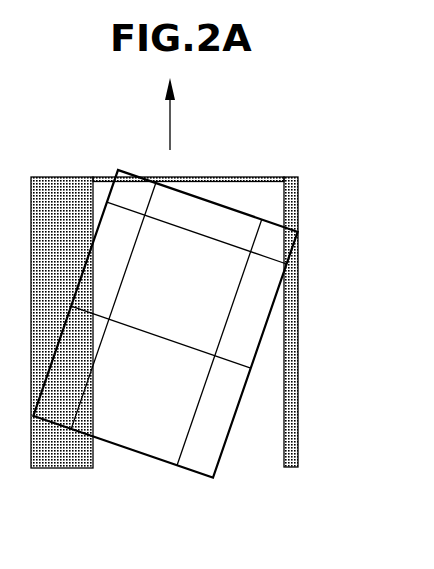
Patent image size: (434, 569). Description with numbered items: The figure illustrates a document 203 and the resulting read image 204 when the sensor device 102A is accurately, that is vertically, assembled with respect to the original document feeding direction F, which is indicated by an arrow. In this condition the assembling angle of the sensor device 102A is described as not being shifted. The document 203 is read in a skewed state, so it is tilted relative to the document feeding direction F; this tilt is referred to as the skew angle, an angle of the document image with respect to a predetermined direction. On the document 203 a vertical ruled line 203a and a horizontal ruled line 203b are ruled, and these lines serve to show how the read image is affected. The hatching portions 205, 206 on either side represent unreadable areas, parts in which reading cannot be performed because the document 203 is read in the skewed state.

The original document feeding direction F is at (169, 121).
The sensor device 102A is at (227, 177).
The document 203 is at (165, 324).
The vertical ruled line 203a is at (219, 342).
The horizontal ruled line 203b is at (197, 233).
The read image 204 is at (208, 341).
The hatching portion 205 is at (55, 177).
The hatching portion 206 is at (293, 177).